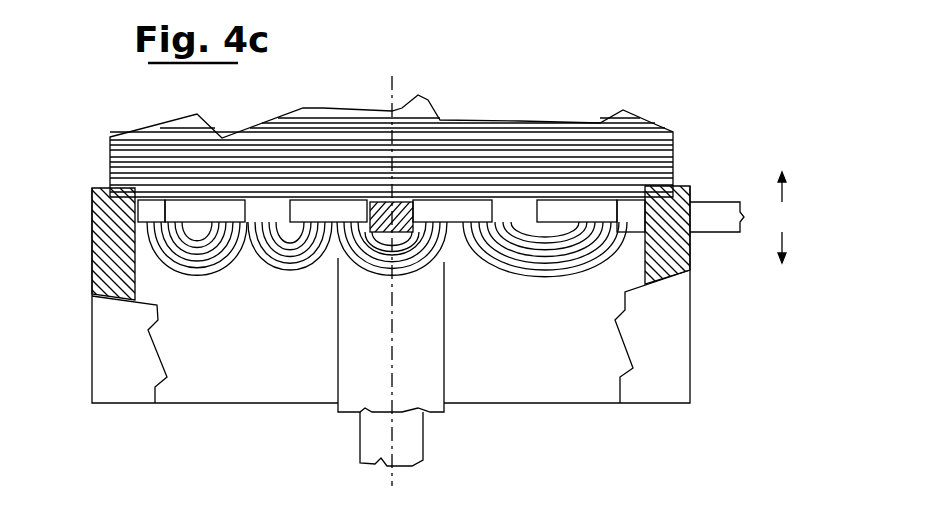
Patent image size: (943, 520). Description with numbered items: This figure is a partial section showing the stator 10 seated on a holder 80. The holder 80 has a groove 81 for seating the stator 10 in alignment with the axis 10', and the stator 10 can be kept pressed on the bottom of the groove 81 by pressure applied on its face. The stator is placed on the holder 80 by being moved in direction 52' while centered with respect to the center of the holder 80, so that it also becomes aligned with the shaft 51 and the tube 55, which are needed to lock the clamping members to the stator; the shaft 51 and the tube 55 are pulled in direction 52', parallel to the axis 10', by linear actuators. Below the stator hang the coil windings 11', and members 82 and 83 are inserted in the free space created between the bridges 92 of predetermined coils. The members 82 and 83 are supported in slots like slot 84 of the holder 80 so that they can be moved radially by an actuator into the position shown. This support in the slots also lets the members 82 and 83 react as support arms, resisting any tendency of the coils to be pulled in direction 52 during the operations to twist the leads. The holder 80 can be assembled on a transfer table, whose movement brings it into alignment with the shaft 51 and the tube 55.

The stator 10 is at (414, 133).
The axis 10' is at (364, 269).
The coil windings 11' is at (387, 273).
The shaft 51 is at (415, 438).
The direction 52 is at (806, 185).
The direction 52' is at (804, 239).
The tube 55 is at (433, 383).
The holder 80 is at (92, 262).
The groove 81 is at (108, 192).
The member 82 is at (395, 222).
The member 83 is at (717, 210).
The slot 84 is at (690, 233).
The bridges 92 is at (268, 222).